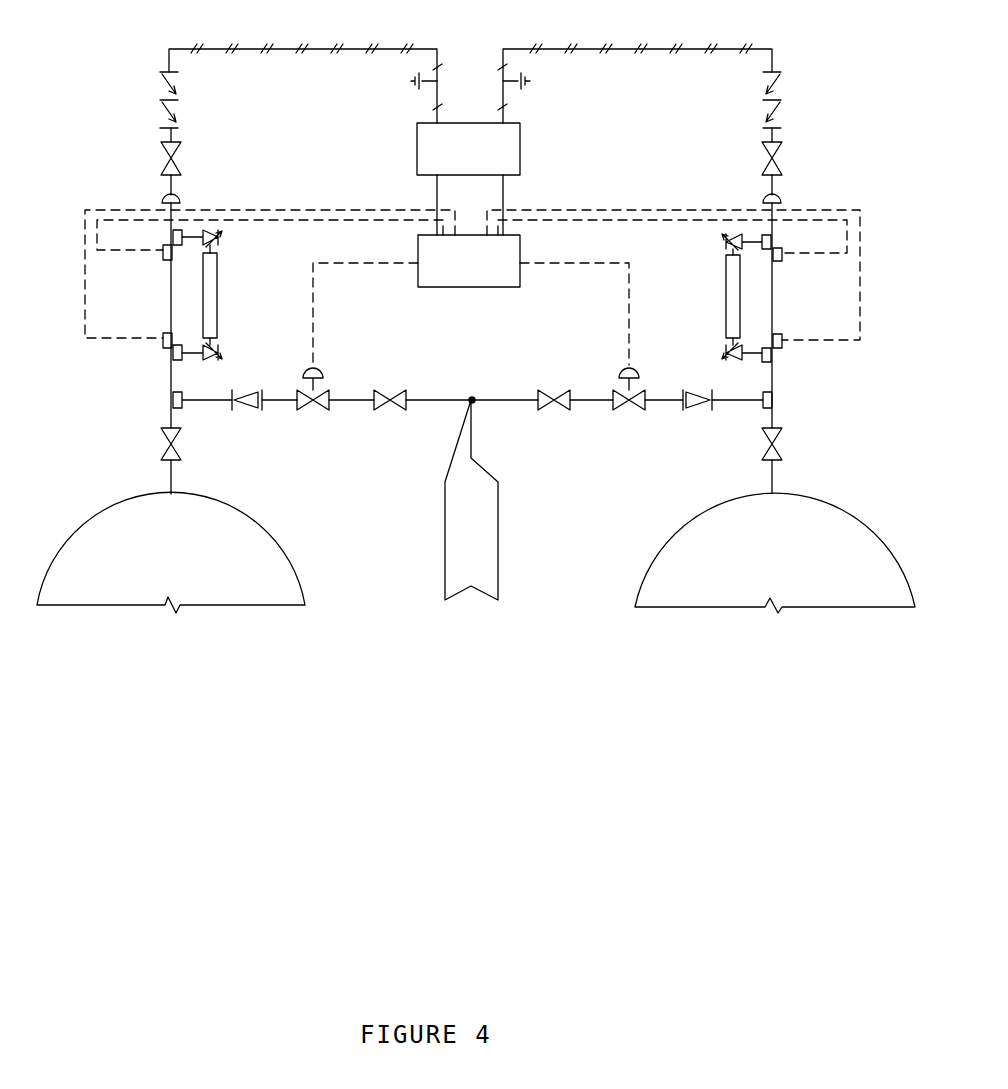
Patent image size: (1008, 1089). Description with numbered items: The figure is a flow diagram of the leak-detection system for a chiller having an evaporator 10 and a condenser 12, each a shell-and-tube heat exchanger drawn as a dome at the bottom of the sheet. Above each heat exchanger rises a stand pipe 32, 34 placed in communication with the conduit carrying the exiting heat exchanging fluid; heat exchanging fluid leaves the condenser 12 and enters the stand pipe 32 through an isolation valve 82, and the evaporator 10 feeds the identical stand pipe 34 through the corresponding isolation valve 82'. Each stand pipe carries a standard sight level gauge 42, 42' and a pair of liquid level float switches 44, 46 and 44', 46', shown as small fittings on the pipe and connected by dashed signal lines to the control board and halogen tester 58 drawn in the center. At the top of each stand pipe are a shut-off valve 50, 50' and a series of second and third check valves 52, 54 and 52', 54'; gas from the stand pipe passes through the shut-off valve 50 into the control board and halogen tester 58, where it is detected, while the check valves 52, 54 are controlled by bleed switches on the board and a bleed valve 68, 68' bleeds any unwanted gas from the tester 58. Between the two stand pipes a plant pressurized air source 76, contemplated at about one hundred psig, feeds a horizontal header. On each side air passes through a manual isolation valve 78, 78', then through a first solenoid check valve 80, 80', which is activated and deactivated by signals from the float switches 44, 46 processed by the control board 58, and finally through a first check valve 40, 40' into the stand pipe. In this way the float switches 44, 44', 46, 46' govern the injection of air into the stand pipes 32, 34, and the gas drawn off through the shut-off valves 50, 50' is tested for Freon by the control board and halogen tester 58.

The evaporator 10 is at (262, 530).
The condenser 12 is at (845, 512).
The stand pipe 32 is at (765, 198).
The stand pipe 34 is at (180, 198).
The first check valve 40 is at (692, 427).
The first check valve 40' is at (254, 424).
The sight level gauge 42 is at (709, 297).
The sight level gauge 42' is at (230, 295).
The liquid level float switch 44 is at (798, 371).
The liquid level float switch 44' is at (133, 370).
The liquid level float switch 46 is at (794, 268).
The liquid level float switch 46' is at (145, 265).
The shut-off valve 50 is at (804, 152).
The shut-off valve 50' is at (123, 153).
The second check valve 52 is at (734, 116).
The second check valve 52' is at (207, 115).
The third check valve 54 is at (806, 79).
The third check valve 54' is at (120, 75).
The control board and halogen tester 58 is at (484, 162).
The bleed valve 68 is at (548, 90).
The bleed valve 68' is at (383, 94).
The plant pressurized air source 76 is at (498, 514).
The manual isolation valve 78 is at (540, 360).
The manual isolation valve 78' is at (401, 360).
The first solenoid check valve 80 is at (607, 360).
The first solenoid check valve 80' is at (334, 360).
The isolation valve 82 is at (800, 443).
The isolation valve 82' is at (135, 444).